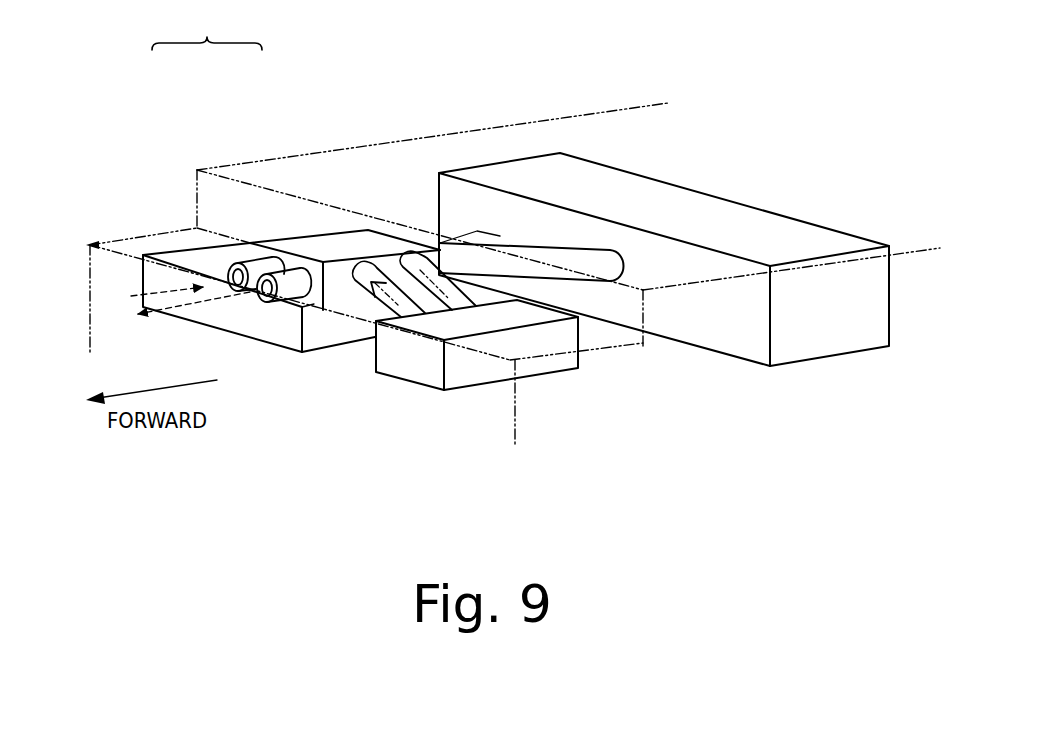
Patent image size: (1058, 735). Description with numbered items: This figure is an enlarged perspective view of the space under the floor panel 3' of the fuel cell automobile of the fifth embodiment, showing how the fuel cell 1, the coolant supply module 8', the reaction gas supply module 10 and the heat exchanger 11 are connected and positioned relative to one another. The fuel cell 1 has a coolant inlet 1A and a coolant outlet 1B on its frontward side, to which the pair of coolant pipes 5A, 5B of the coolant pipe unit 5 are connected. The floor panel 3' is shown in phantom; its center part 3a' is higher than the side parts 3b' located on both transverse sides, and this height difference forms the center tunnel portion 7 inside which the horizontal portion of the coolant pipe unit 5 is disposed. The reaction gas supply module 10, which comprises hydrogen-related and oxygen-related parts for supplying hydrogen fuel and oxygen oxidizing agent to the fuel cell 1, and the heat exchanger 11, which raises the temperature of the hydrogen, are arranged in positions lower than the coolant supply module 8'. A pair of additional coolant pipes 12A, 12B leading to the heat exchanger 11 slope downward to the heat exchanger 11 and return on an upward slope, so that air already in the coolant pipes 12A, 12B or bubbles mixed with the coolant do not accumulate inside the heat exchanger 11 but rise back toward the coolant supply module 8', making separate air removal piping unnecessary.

The fuel cell 1 is at (691, 188).
The coolant inlet 1A is at (594, 246).
The coolant outlet 1B is at (628, 254).
The floor panel 3' is at (513, 252).
The center part of the floor panel 3a' is at (374, 147).
The side parts of the floor panel 3b' is at (373, 304).
The coolant pipe unit 5 is at (207, 29).
The coolant pipe 5A is at (241, 252).
The coolant pipe 5B is at (286, 263).
The center tunnel portion 7 is at (312, 242).
The coolant supply module 8' is at (293, 349).
The reaction gas supply module 10 is at (227, 320).
The heat exchanger 11 is at (476, 385).
The additional coolant pipe 12A is at (472, 302).
The additional coolant pipe 12B is at (395, 308).